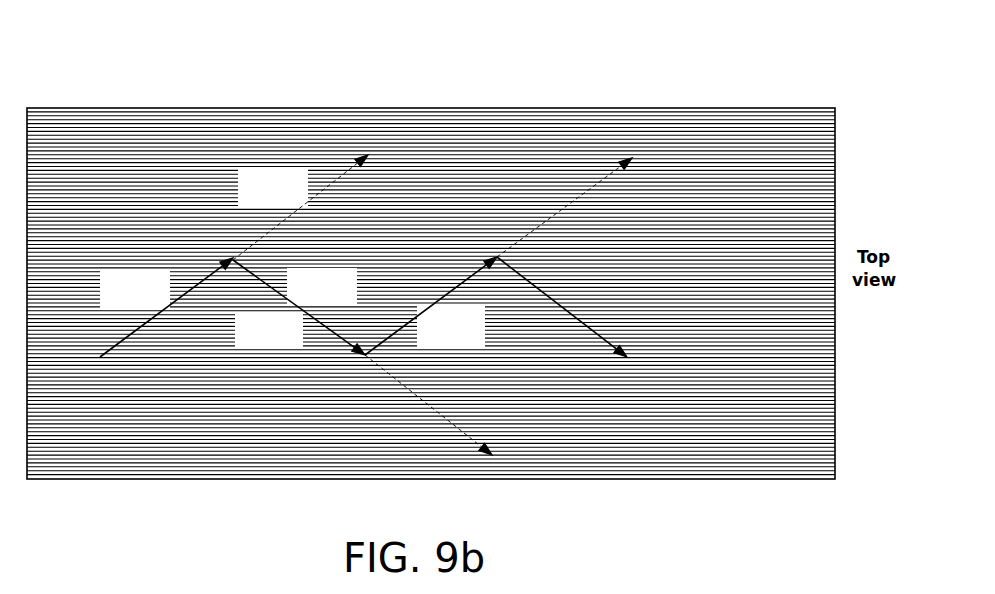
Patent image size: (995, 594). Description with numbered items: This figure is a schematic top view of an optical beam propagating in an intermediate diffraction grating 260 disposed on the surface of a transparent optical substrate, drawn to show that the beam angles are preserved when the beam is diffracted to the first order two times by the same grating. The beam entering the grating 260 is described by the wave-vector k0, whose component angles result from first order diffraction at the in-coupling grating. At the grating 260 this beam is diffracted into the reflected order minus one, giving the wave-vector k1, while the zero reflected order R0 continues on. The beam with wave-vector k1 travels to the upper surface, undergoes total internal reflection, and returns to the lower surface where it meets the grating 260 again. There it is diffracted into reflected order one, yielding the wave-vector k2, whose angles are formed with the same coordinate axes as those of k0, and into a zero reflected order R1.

The intermediate diffraction grating 260 is at (190, 108).
The wave-vector of the entering optical beam k0 is at (166, 307).
The wave-vector of the first diffracted beam k1 is at (299, 307).
The wave-vector of the twice-diffracted beam k2 is at (498, 257).
The zero reflected order R0 is at (300, 207).
The zero reflected order at second diffraction R1 is at (374, 388).